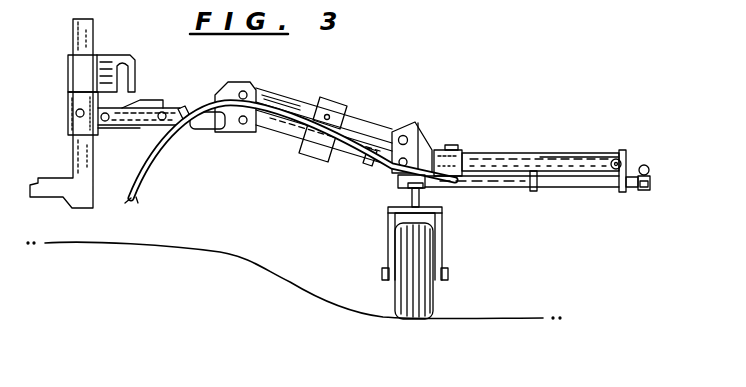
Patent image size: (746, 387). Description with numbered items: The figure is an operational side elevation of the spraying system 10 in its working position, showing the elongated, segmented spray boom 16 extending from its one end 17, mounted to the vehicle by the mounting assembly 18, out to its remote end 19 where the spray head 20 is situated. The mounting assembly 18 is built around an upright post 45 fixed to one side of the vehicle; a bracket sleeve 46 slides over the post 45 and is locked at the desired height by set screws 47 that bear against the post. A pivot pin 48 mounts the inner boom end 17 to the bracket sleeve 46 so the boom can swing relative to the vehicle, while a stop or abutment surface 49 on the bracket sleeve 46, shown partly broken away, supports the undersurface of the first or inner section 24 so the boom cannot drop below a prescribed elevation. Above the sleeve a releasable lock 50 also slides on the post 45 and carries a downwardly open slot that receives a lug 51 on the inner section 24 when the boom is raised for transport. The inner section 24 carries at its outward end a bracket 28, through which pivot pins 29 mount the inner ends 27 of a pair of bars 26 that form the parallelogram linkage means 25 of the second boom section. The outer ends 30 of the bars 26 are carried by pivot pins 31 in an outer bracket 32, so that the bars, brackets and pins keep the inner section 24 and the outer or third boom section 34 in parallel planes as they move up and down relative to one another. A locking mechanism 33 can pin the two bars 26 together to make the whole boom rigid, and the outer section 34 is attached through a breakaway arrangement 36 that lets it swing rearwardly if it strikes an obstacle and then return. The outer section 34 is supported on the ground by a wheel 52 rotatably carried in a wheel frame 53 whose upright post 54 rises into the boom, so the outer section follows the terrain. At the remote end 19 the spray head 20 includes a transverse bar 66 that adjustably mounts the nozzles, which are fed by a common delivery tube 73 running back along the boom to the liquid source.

The system 10 is at (398, 121).
The spray boom 16 is at (359, 115).
The one end 17 is at (173, 100).
The mounting assembly 18 is at (67, 92).
The remote end 19 is at (597, 158).
The spray head 20 is at (655, 198).
The first or inner section 24 is at (198, 122).
The parallelogram linkage means 25 is at (287, 100).
The bars 26 is at (291, 141).
The inner ends 27 is at (283, 130).
The bracket 28 is at (242, 160).
The pivot pins 29 is at (255, 137).
The outer ends 30 is at (387, 167).
The pivot pins 31 is at (417, 148).
The outer bracket 32 is at (420, 148).
The locking mechanism 33 is at (323, 100).
The outer or third boom section 34 is at (547, 158).
The breakaway arrangement 36 is at (470, 151).
The post 45 is at (78, 24).
The bracket sleeve 46 is at (68, 135).
The set screws 47 is at (67, 117).
The pivot pin 48 is at (133, 105).
The stop or abutment surface 49 is at (135, 128).
The releasable lock 50 is at (115, 56).
The lug 51 is at (165, 112).
The wheel 52 is at (420, 295).
The wheel frame 53 is at (442, 237).
The upright post 54 is at (422, 193).
The bar 66 is at (623, 160).
The common delivery tube 73 is at (585, 190).